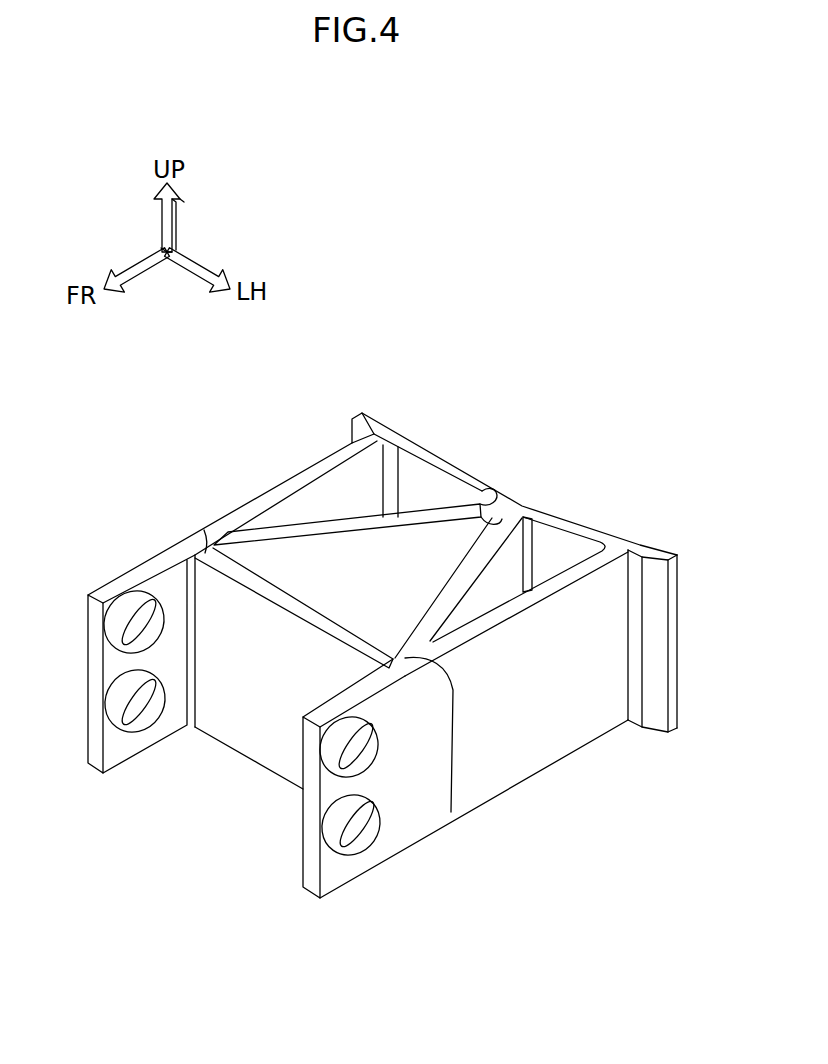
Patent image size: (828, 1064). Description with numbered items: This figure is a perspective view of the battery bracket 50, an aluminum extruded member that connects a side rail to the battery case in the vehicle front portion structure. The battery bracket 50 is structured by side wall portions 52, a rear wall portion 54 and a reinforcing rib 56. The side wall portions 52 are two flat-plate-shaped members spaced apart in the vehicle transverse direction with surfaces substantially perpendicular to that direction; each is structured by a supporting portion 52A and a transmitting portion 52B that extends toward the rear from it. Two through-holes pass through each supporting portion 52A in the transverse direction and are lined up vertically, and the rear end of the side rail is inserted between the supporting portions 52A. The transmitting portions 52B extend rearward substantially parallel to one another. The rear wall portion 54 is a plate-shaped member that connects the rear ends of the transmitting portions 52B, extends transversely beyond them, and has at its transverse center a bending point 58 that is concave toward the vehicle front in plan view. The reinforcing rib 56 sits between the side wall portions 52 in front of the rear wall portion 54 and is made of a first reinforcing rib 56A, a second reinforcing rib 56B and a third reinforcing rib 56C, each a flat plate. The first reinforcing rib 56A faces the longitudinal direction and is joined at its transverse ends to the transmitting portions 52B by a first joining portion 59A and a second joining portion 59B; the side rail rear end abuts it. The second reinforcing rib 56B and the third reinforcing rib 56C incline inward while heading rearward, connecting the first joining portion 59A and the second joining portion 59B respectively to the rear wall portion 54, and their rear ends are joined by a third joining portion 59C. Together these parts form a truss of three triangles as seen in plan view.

The battery bracket 50 is at (560, 818).
The side wall portions 52 is at (331, 441).
The supporting portion 52A is at (128, 574).
The transmitting portion 52B is at (303, 470).
The rear wall portion 54 is at (633, 540).
The reinforcing rib 56 is at (262, 531).
The first reinforcing rib 56A is at (255, 752).
The second reinforcing rib 56B is at (440, 598).
The third reinforcing rib 56C is at (313, 538).
The bending point 58 is at (522, 508).
The first joining portion 59A is at (452, 814).
The second joining portion 59B is at (204, 530).
The third joining portion 59C is at (478, 497).